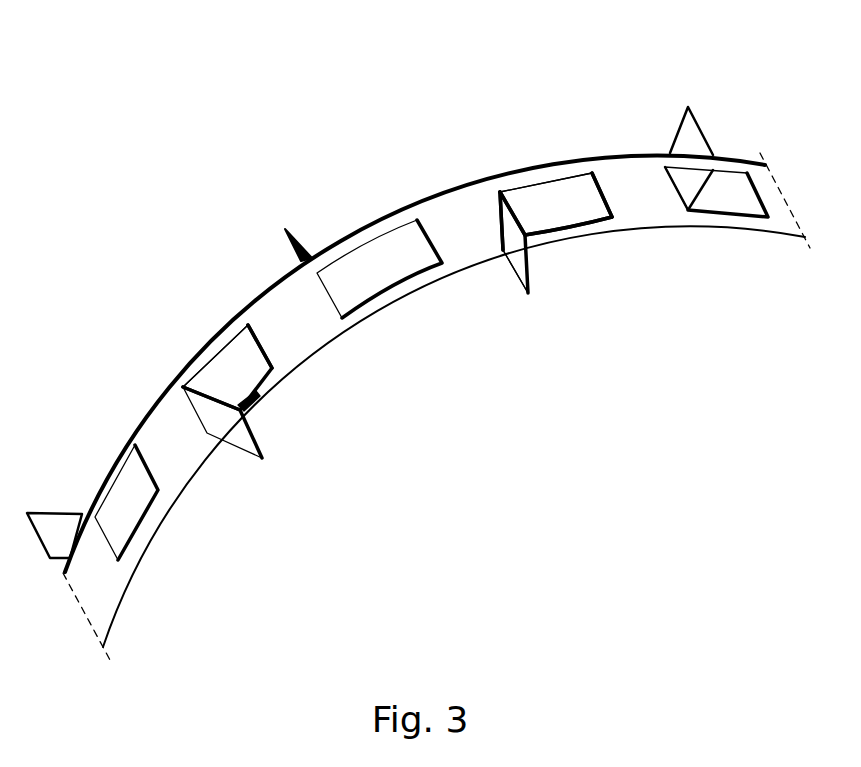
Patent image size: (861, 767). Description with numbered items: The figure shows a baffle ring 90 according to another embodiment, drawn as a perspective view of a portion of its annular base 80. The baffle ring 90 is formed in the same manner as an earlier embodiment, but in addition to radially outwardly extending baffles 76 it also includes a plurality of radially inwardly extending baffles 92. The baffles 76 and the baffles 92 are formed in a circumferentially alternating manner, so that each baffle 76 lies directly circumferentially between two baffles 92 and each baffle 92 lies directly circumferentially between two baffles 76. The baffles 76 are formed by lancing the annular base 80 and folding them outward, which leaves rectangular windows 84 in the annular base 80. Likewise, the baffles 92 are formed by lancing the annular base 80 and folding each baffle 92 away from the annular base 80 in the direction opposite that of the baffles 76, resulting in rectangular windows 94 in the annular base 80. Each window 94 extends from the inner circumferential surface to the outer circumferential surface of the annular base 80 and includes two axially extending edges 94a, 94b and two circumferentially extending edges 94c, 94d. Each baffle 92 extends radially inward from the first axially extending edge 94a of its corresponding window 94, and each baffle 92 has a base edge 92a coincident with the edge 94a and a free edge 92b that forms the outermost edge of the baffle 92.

The baffle ring 90 is at (619, 111).
The annular base 80 is at (552, 173).
The baffles 76 is at (57, 525).
The rectangular windows 84 is at (118, 455).
The radially inwardly extending baffles 92 is at (238, 437).
The radially outer base edge 92a is at (500, 191).
The radially outer free edge 92b is at (515, 272).
The rectangular windows 94 is at (255, 397).
The first axially extending edge 94a is at (508, 228).
The second axially extending edge 94b is at (257, 343).
The circumferentially extending edge 94c is at (258, 397).
The circumferentially extending edge 94d is at (225, 342).